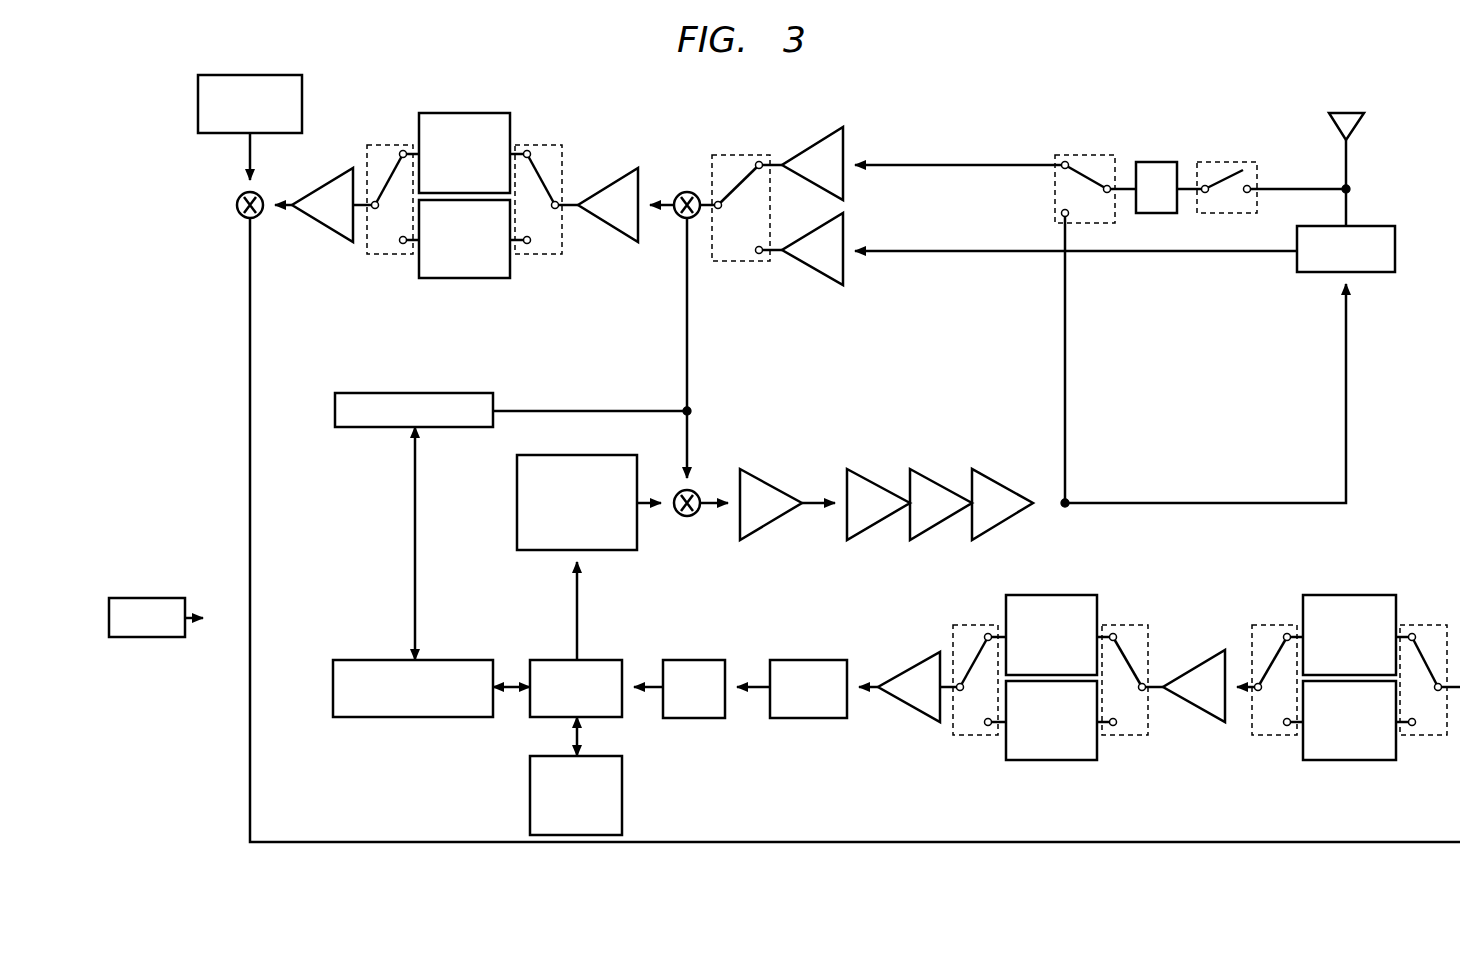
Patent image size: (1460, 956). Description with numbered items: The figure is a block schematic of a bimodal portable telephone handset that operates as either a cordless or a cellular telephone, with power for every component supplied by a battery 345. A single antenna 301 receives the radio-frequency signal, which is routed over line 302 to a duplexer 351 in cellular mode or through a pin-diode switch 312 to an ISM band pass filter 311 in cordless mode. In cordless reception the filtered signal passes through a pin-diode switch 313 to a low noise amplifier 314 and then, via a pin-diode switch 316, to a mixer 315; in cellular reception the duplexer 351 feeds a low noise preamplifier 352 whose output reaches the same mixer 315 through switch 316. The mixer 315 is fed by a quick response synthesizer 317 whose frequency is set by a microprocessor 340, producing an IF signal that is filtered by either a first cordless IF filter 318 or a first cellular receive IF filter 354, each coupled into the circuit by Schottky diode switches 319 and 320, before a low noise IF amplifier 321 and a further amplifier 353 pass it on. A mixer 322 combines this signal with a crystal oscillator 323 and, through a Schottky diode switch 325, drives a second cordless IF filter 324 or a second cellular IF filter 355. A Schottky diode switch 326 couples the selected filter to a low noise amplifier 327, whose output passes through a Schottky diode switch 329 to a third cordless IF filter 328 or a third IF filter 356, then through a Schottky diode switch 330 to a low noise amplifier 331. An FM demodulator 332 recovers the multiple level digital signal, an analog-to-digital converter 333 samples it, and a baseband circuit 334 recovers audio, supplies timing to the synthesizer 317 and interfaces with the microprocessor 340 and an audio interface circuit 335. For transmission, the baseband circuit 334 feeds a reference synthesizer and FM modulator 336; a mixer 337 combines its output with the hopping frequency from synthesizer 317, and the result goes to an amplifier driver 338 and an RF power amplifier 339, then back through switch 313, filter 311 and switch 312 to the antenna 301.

The antenna 301 is at (1358, 123).
The line 302 is at (1352, 215).
The ISM band pass filter 311 is at (1148, 162).
The pin-diode switch 312 is at (1218, 162).
The pin-diode switch 313 is at (1078, 155).
The low noise amplifier 314 is at (810, 148).
The mixer 315 is at (683, 192).
The pin-diode switch 316 is at (740, 155).
The quick response synthesizer 317 is at (358, 393).
The first cordless intermediate frequency filter 318 is at (453, 113).
The Schottky diode switch 319 is at (527, 145).
The Schottky diode switch 320 is at (383, 145).
The low noise IF amplifier 321 is at (330, 182).
The mixer 322 is at (237, 205).
The crystal oscillator 323 is at (258, 75).
The second cordless IF filter 324 is at (1349, 618).
The Schottky diode switch 325 is at (1415, 625).
The Schottky diode switch 326 is at (1267, 625).
The low noise amplifier 327 is at (1210, 659).
The third cordless IF filter 328 is at (1035, 595).
The Schottky diode switch 329 is at (1118, 625).
The Schottky diode switch 330 is at (968, 625).
The low noise amplifier 331 is at (917, 665).
The FM demodulator 332 is at (792, 660).
The analog-to-digital converter 333 is at (683, 660).
The baseband circuit 334 is at (597, 660).
The audio interface circuit 335 is at (622, 812).
The reference synthesizer and FM modulator 336 is at (517, 507).
The mixer 337 is at (688, 516).
The amplifier driver 338 is at (755, 477).
The RF power amplifier 339 is at (940, 482).
The microprocessor 340 is at (365, 717).
The battery 345 is at (140, 598).
The duplexer 351 is at (1395, 248).
The low noise preamplifier 352 is at (803, 262).
The amplifier 353 is at (607, 187).
The first cellular receive IF filter 354 is at (443, 278).
The second cellular IF filter 355 is at (1335, 760).
The third IF filter 356 is at (1030, 760).